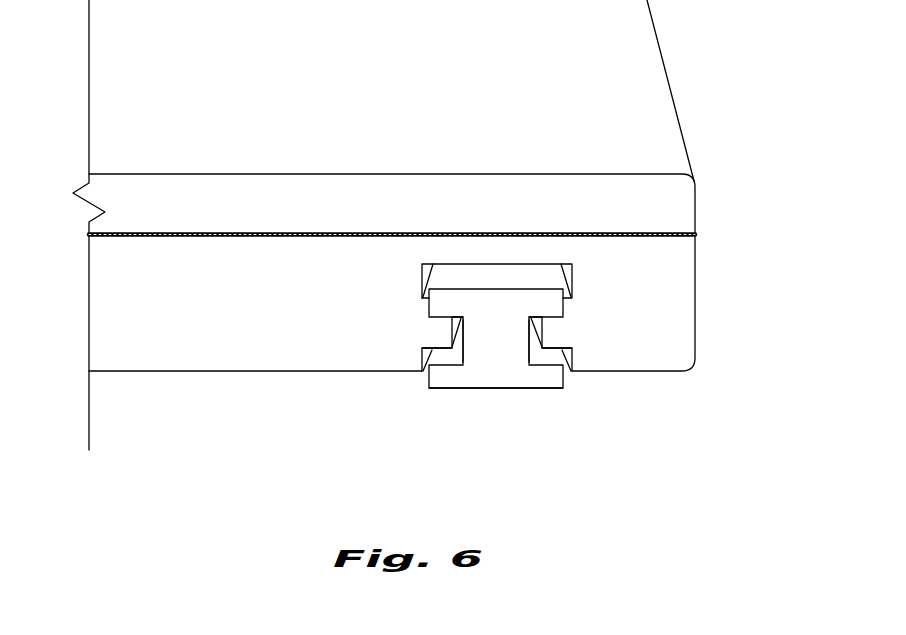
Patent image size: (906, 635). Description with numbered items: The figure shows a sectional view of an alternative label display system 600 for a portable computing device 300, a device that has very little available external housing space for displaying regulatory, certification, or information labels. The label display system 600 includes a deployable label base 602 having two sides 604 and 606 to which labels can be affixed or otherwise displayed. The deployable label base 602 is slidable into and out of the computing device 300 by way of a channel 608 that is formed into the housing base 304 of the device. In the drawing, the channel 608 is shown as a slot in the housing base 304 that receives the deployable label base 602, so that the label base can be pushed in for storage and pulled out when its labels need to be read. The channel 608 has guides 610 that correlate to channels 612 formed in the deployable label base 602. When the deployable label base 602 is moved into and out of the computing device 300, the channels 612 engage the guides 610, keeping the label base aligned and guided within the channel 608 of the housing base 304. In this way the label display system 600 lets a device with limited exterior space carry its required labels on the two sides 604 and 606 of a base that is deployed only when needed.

The portable computing device 300 is at (680, 52).
The housing base 304 is at (698, 268).
The label display system 600 is at (480, 188).
The deployable label base 602 is at (513, 390).
The side 604 is at (476, 266).
The side 606 is at (480, 400).
The channel 608 is at (522, 263).
The guides 610 is at (421, 337).
The channels 612 is at (455, 357).